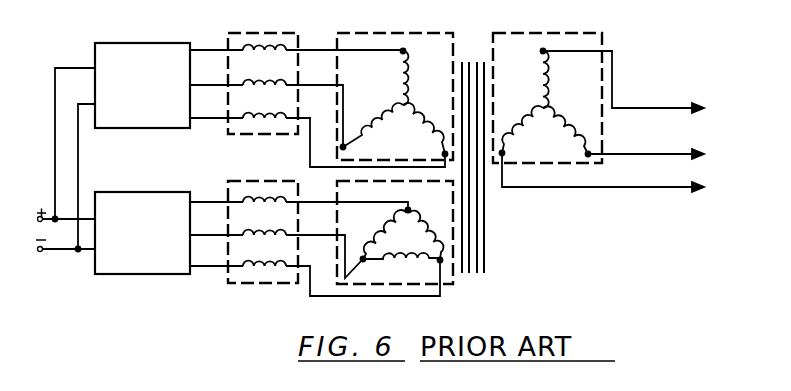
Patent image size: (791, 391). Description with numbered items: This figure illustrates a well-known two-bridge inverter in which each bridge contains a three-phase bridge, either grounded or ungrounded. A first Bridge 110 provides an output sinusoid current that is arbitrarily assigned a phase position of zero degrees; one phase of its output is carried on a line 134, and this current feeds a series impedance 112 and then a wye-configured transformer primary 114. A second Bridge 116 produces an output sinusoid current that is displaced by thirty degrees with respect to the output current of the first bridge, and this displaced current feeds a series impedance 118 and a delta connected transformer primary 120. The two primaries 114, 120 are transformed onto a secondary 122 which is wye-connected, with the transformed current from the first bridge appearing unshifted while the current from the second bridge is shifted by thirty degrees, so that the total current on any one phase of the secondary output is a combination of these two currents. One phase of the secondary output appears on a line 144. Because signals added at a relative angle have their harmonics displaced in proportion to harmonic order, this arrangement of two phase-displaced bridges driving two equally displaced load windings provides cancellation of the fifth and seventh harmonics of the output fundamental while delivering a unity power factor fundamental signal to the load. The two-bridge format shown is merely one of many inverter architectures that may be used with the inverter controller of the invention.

The first Bridge 110 is at (163, 43).
The line 134 is at (200, 50).
The series impedance 112 is at (255, 33).
The wye-configured transformer primary 114 is at (407, 33).
The second Bridge 116 is at (130, 192).
The series impedance 118 is at (276, 284).
The delta connected transformer primary 120 is at (415, 286).
The secondary 122 is at (577, 33).
The line 144 is at (640, 108).